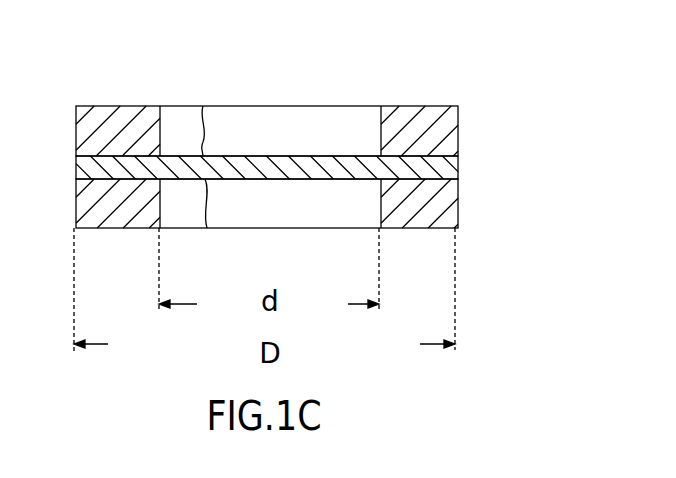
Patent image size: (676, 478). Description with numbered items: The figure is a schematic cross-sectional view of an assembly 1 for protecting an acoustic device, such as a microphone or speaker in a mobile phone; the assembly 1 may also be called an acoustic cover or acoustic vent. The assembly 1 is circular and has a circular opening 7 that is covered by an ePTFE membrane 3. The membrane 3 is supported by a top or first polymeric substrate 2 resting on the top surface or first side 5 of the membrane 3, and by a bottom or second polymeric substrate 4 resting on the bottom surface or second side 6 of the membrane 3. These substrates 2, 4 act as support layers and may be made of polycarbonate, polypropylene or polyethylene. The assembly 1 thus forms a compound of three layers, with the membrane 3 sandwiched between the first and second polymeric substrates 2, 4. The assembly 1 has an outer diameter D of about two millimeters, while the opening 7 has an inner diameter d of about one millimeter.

The assembly 1 is at (460, 58).
The first polymeric substrate 2 is at (450, 120).
The ePTFE membrane 3 is at (447, 164).
The second polymeric substrate 4 is at (445, 208).
The first side 5 is at (203, 106).
The second side 6 is at (207, 228).
The opening 7 is at (300, 106).